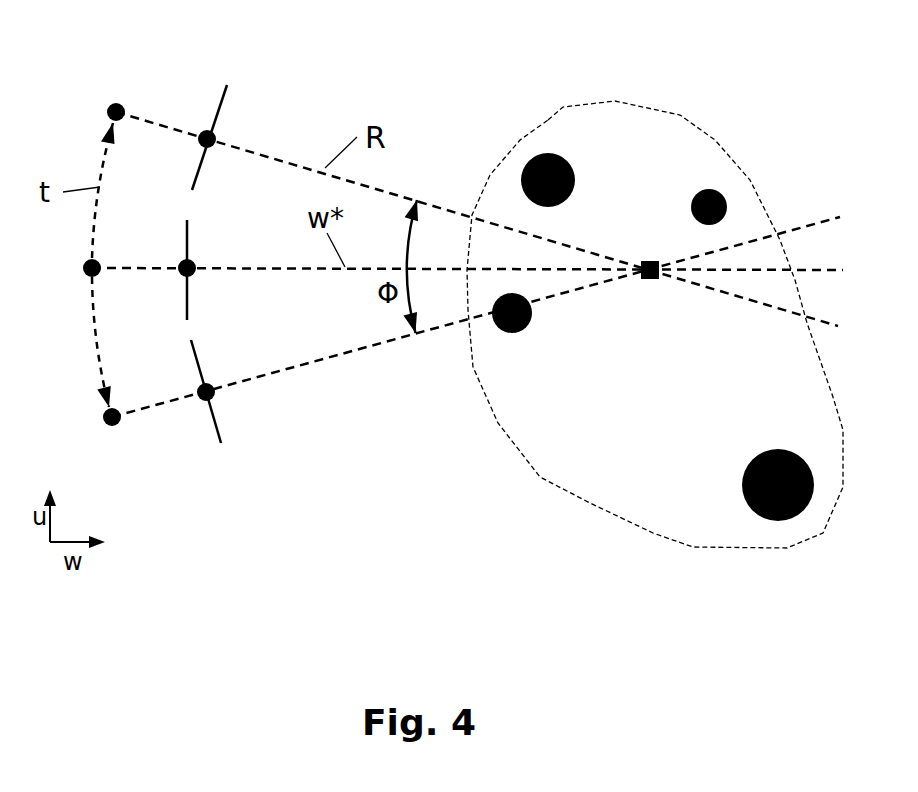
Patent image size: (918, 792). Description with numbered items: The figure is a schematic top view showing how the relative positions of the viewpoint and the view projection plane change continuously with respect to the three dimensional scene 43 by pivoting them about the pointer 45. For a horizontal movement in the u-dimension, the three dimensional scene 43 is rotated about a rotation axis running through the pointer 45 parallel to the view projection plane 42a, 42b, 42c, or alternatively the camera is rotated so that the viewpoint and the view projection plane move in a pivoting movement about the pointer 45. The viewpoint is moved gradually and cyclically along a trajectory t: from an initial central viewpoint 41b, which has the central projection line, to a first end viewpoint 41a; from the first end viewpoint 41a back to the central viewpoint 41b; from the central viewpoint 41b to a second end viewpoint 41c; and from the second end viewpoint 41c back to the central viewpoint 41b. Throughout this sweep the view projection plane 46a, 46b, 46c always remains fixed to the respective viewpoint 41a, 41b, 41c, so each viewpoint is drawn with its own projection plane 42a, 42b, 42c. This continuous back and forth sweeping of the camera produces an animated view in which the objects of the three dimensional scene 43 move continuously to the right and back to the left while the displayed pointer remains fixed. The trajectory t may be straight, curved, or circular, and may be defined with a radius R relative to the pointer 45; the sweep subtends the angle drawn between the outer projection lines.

The first end viewpoint 41a is at (102, 415).
The central viewpoint 41b is at (85, 275).
The second end viewpoint 41c is at (106, 111).
The view projection plane 42a is at (218, 417).
The view projection plane 42b is at (183, 280).
The view projection plane 42c is at (207, 155).
The three dimensional scene 43 is at (548, 120).
The pointer 45 is at (650, 262).
The view projection plane 46a is at (212, 385).
The view projection plane 46b is at (182, 260).
The view projection plane 46c is at (203, 132).